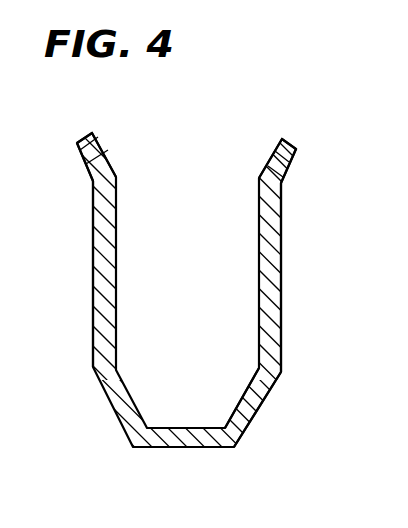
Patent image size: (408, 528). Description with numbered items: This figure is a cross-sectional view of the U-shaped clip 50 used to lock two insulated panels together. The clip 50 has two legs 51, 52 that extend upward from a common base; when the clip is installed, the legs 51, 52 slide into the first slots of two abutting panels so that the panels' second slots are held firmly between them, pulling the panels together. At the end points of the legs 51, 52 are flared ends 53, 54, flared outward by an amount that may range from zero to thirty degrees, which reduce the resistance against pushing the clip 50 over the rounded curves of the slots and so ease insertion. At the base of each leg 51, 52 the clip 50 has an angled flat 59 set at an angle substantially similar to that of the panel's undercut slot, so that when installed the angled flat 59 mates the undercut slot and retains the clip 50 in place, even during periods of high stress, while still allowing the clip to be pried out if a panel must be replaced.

The U-shaped clip 50 is at (197, 449).
The leg 51 is at (281, 329).
The leg 52 is at (92, 329).
The flared end 53 is at (78, 152).
The flared end 54 is at (296, 152).
The angled flat 59 is at (262, 408).